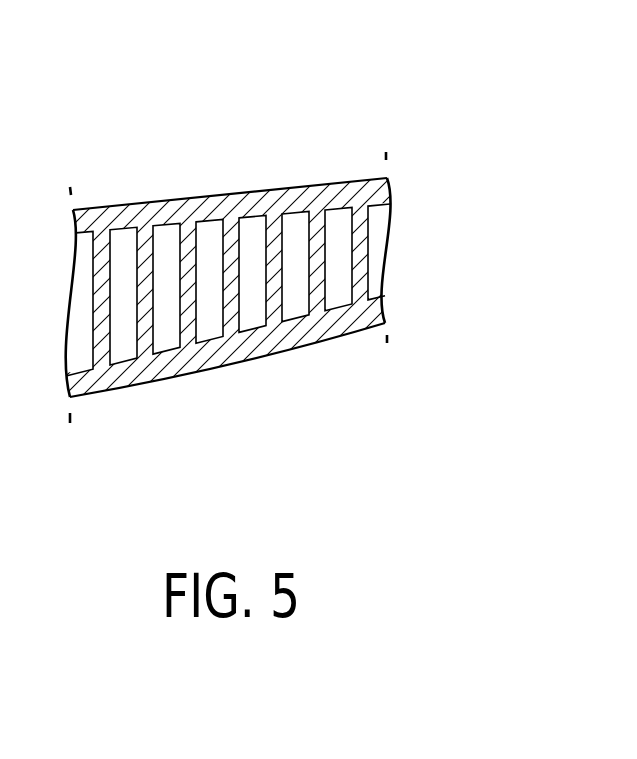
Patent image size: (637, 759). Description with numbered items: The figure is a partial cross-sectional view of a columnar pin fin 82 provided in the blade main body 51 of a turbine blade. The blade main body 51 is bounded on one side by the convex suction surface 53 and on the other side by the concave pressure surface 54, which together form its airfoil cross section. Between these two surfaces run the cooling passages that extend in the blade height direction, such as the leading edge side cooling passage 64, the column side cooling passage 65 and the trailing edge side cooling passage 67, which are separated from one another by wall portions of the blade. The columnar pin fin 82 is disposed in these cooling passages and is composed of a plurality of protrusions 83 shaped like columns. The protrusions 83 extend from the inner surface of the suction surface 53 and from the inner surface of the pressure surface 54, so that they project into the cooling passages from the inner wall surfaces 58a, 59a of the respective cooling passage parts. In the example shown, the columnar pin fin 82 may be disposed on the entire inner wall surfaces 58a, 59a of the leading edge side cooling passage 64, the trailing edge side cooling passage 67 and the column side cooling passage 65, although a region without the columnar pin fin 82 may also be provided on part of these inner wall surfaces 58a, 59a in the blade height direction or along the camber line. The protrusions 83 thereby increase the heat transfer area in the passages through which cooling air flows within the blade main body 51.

The blade main body 51 is at (397, 101).
The suction surface 53 is at (231, 365).
The pressure surface 54 is at (233, 192).
The inner wall surface 58a is at (193, 226).
The inner wall surface 59a is at (119, 364).
The leading edge side cooling passage 64 is at (122, 247).
The trailing edge side cooling passage 67 is at (166, 288).
The column side cooling passage 65 is at (252, 273).
The columnar pin fin 82 is at (374, 220).
The protrusions 83 is at (362, 263).